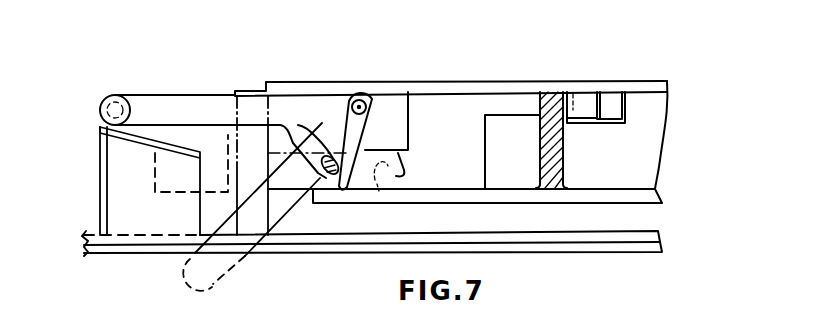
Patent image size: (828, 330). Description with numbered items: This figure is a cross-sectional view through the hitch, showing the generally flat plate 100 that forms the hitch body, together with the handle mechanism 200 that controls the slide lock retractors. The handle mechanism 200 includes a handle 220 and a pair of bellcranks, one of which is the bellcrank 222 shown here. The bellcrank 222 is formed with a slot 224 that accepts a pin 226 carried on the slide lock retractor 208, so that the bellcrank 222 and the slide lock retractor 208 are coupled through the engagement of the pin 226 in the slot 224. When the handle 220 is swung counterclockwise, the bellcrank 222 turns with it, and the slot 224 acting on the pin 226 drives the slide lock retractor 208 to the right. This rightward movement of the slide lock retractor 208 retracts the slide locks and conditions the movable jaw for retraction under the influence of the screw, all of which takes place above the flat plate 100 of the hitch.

The flat plate 100 is at (104, 252).
The handle mechanism 200 is at (607, 98).
The slide lock retractor 208 is at (502, 100).
The handle 220 is at (162, 93).
The bellcrank 222 is at (357, 136).
The slot 224 is at (348, 97).
The pin 226 is at (300, 198).